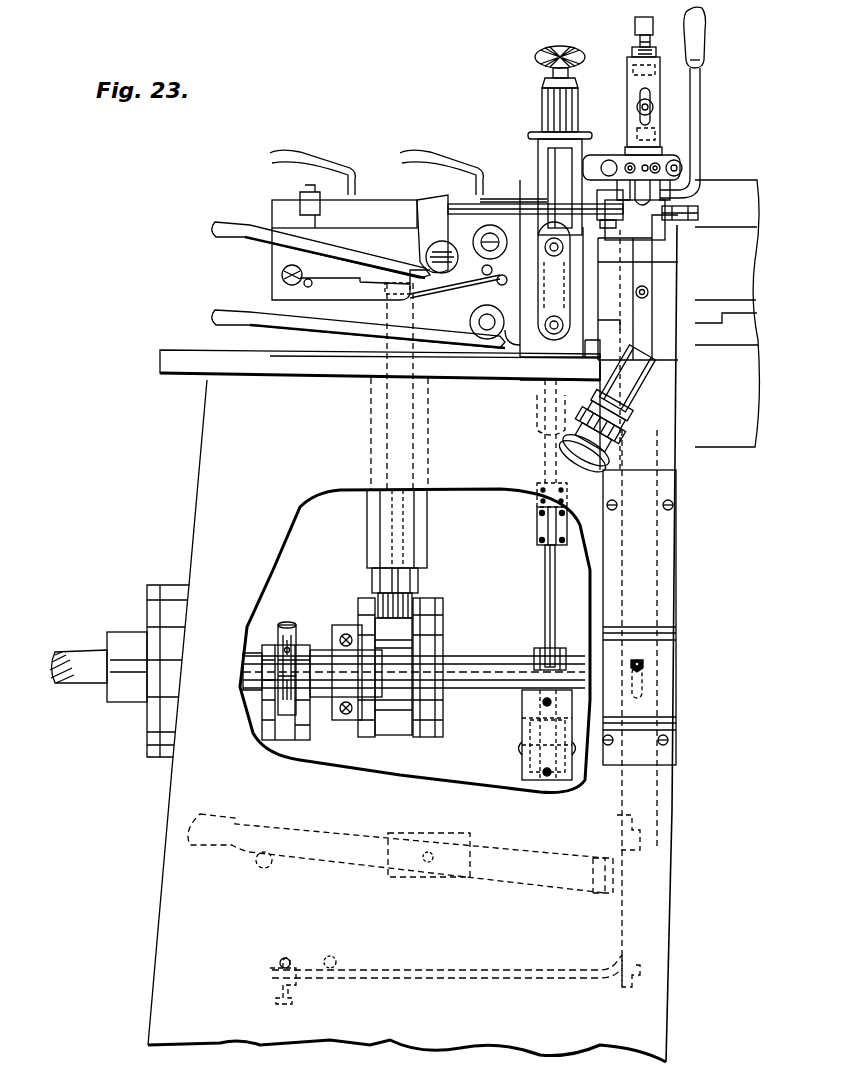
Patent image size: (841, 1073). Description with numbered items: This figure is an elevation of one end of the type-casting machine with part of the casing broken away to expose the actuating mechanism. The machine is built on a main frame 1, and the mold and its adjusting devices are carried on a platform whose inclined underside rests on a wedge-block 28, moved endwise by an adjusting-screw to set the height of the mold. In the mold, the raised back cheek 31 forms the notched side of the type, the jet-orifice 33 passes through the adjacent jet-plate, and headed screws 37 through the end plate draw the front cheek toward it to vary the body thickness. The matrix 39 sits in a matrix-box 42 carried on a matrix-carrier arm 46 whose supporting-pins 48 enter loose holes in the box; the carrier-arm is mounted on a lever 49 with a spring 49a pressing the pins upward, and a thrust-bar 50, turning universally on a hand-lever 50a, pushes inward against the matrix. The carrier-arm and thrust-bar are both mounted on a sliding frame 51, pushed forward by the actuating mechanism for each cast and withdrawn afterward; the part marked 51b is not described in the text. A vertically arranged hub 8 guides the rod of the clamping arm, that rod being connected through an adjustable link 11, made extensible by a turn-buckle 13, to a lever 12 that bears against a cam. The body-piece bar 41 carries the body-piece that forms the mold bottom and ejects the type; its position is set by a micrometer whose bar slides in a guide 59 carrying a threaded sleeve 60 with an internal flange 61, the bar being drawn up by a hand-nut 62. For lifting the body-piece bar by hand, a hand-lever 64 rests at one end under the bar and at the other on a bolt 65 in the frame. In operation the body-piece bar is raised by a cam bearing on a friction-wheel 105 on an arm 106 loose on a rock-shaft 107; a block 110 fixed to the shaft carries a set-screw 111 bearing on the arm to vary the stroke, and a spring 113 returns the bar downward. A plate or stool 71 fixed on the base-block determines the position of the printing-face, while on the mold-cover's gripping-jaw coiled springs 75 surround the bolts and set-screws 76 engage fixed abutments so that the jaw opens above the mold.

The main frame 1 is at (195, 362).
The hub 8 is at (573, 197).
The adjustable link 11 is at (556, 463).
The lever 12 is at (533, 755).
The turn-buckle 13 is at (537, 529).
The wedge-block 28 is at (593, 352).
The back cheek 31 is at (638, 225).
The jet-orifice 33 is at (652, 197).
The headed screws 37 is at (676, 160).
The matrix 39 is at (558, 134).
The body-piece bar 41 is at (638, 778).
The matrix-box 42 is at (553, 170).
The matrix-carrier arm 46 is at (660, 213).
The supporting-pins 48 is at (560, 197).
The lever 49 is at (358, 326).
The spring 49a is at (458, 282).
The thrust-bar 50 is at (530, 205).
The hand-lever 50a is at (321, 261).
The sliding frame 51 is at (376, 211).
The pivot screw 51b is at (327, 273).
The guide 59 is at (633, 345).
The threaded sleeve 60 is at (637, 372).
The internal flange 61 is at (618, 387).
The hand-nut 62 is at (595, 458).
The hand-lever 64 is at (528, 868).
The bolt 65 is at (265, 858).
The plate or stool 71 is at (612, 200).
The coiled spring 75 is at (678, 167).
The set-screws or bolts 76 is at (628, 164).
The friction-wheel 105 is at (290, 730).
The arm 106 is at (270, 713).
The rock-shaft 107 is at (486, 675).
The block 110 is at (288, 690).
The set-screw 111 is at (290, 626).
The spring 113 is at (413, 977).